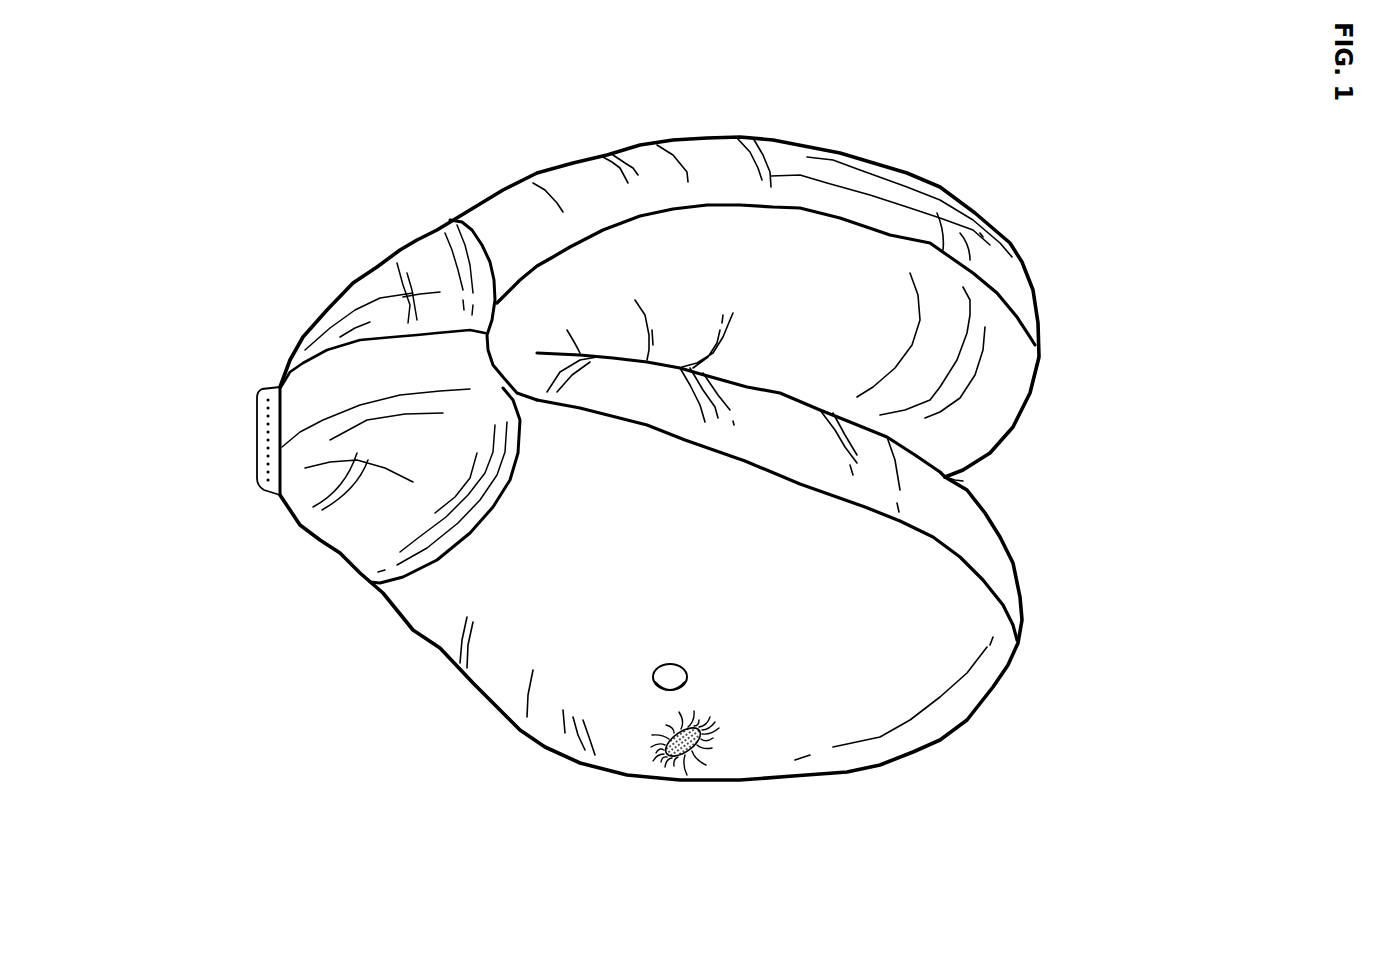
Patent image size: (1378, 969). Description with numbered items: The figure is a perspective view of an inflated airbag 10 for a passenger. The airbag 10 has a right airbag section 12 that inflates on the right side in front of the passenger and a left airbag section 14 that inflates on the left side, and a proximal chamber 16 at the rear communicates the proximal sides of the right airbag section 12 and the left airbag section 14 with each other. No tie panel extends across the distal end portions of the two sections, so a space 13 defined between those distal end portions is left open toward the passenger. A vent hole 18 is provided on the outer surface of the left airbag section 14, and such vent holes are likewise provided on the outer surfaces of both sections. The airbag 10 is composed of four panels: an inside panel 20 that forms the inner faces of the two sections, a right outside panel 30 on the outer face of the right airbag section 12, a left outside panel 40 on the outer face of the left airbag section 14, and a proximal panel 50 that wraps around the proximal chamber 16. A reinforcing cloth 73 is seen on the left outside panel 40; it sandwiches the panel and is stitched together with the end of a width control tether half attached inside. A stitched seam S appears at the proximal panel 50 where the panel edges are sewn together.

The airbag 10 is at (778, 109).
The right airbag section 12 is at (875, 180).
The space 13 is at (963, 481).
The left airbag section 14 is at (811, 744).
The proximal chamber 16 is at (367, 513).
The vent hole 18 is at (673, 670).
The inside panel 20 is at (988, 543).
The right outside panel 30 is at (593, 173).
The left outside panel 40 is at (557, 725).
The proximal panel 50 is at (373, 293).
The reinforcing cloth 73 is at (690, 757).
The stitched seam S is at (268, 390).